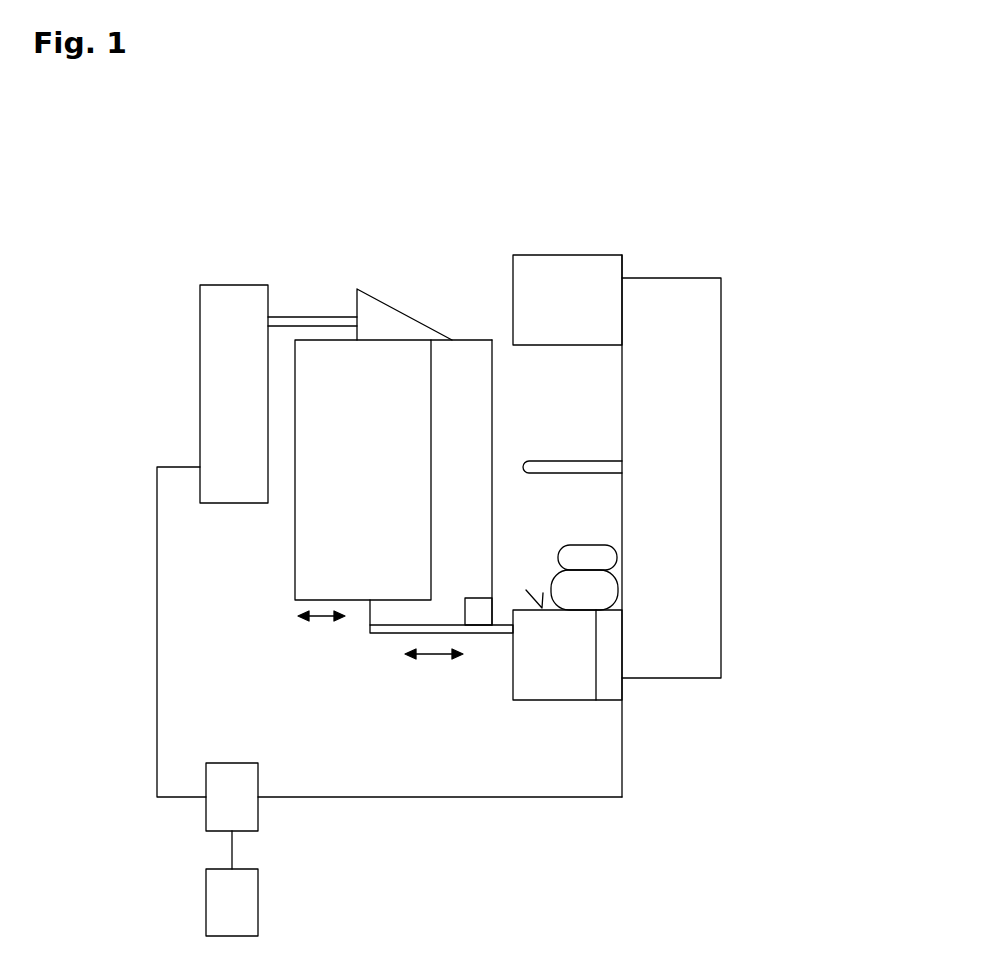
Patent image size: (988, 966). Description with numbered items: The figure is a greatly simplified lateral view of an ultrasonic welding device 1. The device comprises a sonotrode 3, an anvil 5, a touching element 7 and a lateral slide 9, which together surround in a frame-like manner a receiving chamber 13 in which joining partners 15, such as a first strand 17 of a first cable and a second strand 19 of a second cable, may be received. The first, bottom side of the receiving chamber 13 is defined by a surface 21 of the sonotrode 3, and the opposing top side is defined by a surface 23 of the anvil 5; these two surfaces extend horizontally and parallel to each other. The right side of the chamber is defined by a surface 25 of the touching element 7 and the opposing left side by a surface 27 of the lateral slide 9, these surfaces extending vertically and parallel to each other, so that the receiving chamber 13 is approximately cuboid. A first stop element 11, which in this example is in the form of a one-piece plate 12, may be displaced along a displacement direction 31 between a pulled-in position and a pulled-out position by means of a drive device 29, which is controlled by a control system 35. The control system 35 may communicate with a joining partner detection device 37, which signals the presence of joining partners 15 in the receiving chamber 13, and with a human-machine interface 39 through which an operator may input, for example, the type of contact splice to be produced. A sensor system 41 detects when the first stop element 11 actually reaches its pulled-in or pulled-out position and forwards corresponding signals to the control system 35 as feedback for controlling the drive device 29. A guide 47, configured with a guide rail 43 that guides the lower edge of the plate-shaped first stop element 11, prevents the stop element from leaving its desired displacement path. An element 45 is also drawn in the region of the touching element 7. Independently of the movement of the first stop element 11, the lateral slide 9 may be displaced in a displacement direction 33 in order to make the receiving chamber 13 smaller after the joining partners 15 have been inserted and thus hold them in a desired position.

The ultrasonic welding device 1 is at (145, 194).
The sonotrode 3 is at (555, 688).
The anvil 5 is at (593, 266).
The touching element 7 is at (707, 343).
The lateral slide 9 is at (305, 575).
The first stop element 11 is at (458, 352).
The plate 12 is at (481, 356).
The receiving chamber 13 is at (545, 575).
The joining partners 15 is at (587, 541).
The first strand 17 is at (598, 592).
The second strand 19 is at (598, 558).
The surface of the sonotrode 21 is at (526, 590).
The surface of the anvil 23 is at (563, 358).
The surface of the touching element 25 is at (605, 388).
The surface of the lateral slide 27 is at (431, 418).
The drive device 29 is at (230, 296).
The displacement direction of the first stop element 31 is at (432, 658).
The displacement direction of the lateral slide 33 is at (323, 620).
The control system 35 is at (215, 818).
The joining partner detection device 37 is at (607, 688).
The human-machine interface 39 is at (215, 912).
The sensor system 41 is at (482, 610).
The guide rail 43 is at (380, 636).
The pin 45 is at (570, 465).
The guide 47 is at (806, 455).